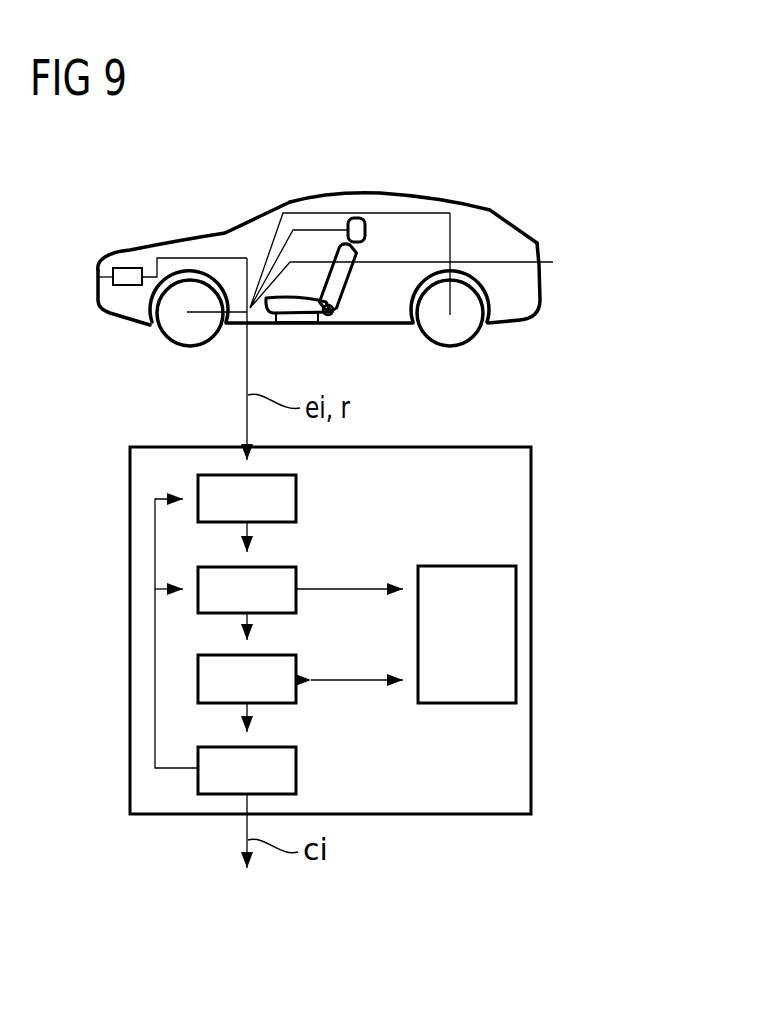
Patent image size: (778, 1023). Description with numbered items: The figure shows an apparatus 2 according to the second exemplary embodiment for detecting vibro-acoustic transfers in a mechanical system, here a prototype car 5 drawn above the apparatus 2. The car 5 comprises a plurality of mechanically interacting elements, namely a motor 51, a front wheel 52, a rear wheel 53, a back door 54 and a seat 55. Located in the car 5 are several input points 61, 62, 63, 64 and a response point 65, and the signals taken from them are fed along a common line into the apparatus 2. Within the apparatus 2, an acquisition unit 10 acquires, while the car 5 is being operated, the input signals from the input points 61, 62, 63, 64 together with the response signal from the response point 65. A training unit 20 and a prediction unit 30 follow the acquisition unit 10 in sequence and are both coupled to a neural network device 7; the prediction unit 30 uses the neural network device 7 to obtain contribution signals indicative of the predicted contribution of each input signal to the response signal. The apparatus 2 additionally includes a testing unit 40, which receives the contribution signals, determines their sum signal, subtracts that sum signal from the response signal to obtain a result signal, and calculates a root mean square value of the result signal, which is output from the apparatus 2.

The apparatus 2 is at (531, 508).
The car 5 is at (610, 181).
The neural network device 7 is at (516, 622).
The acquisition unit 10 is at (296, 498).
The training unit 20 is at (296, 600).
The prediction unit 30 is at (296, 690).
The testing unit 40 is at (296, 770).
The motor 51 is at (97, 272).
The front wheel 52 is at (165, 338).
The rear wheel 53 is at (470, 342).
The back door 54 is at (522, 225).
The seat 55 is at (333, 290).
The input point 61 is at (151, 274).
The input point 62 is at (188, 313).
The input point 63 is at (450, 315).
The input point 64 is at (553, 262).
The response point 65 is at (355, 218).